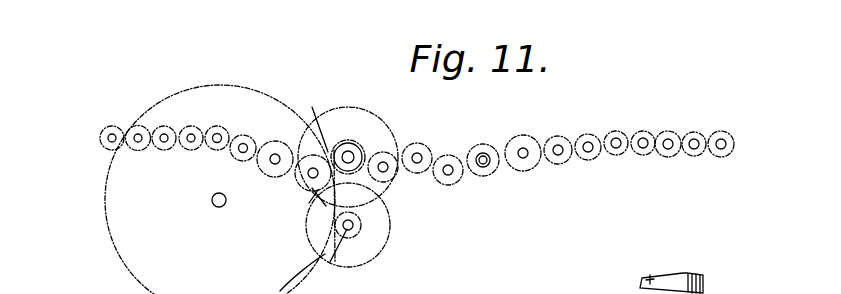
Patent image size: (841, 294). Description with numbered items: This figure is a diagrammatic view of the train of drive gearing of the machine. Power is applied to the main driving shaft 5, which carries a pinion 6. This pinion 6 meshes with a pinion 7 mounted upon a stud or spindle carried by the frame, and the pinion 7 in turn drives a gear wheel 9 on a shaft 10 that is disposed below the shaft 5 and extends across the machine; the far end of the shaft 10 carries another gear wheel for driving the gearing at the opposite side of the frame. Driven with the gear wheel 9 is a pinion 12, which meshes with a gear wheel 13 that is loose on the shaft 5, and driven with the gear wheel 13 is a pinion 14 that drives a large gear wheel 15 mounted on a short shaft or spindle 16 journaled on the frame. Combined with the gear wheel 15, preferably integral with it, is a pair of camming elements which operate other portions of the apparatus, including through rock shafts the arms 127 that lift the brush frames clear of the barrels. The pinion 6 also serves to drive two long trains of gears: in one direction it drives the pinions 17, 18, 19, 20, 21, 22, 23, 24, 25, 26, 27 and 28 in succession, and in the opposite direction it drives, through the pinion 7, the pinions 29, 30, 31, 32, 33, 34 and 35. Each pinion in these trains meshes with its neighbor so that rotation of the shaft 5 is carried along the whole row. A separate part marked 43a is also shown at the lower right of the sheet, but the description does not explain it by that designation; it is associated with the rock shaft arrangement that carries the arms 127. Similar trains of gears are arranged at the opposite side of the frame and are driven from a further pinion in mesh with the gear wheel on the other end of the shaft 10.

The main driving shaft 5 is at (320, 176).
The pinion 6 is at (363, 148).
The pinion 7 is at (296, 185).
The gear wheel 9 is at (379, 252).
The shaft 10 is at (314, 286).
The pinion 12 is at (357, 221).
The gear wheel 13 is at (364, 119).
The pinion 14 is at (343, 141).
The gear wheel 15 is at (127, 255).
The short shaft or spindle 16 is at (220, 207).
The pinion 17 is at (389, 180).
The pinion 18 is at (428, 146).
The pinion 19 is at (455, 187).
The pinion 20 is at (484, 145).
The pinion 21 is at (523, 171).
The pinion 22 is at (563, 137).
The pinion 23 is at (590, 160).
The pinion 24 is at (617, 132).
The pinion 25 is at (643, 155).
The pinion 26 is at (670, 134).
The pinion 27 is at (694, 156).
The pinion 28 is at (735, 144).
The pinion 29 is at (274, 145).
The pinion 30 is at (243, 164).
The pinion 31 is at (219, 128).
The pinion 32 is at (192, 154).
The pinion 33 is at (164, 127).
The pinion 34 is at (141, 154).
The pinion 35 is at (112, 126).
The arm 127 is at (643, 253).
The key stem 43a is at (720, 290).